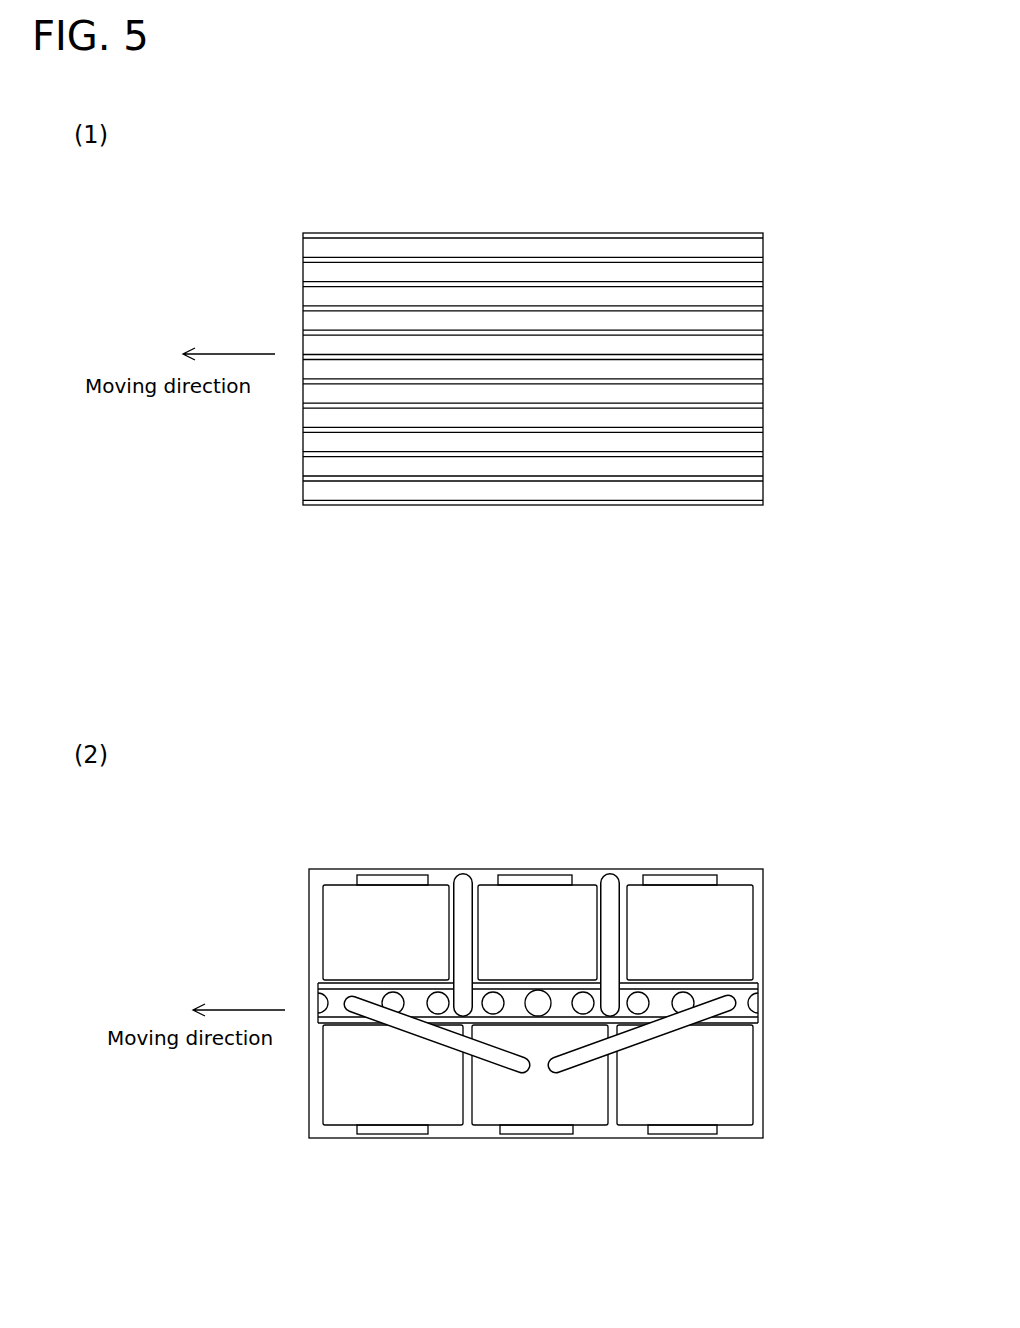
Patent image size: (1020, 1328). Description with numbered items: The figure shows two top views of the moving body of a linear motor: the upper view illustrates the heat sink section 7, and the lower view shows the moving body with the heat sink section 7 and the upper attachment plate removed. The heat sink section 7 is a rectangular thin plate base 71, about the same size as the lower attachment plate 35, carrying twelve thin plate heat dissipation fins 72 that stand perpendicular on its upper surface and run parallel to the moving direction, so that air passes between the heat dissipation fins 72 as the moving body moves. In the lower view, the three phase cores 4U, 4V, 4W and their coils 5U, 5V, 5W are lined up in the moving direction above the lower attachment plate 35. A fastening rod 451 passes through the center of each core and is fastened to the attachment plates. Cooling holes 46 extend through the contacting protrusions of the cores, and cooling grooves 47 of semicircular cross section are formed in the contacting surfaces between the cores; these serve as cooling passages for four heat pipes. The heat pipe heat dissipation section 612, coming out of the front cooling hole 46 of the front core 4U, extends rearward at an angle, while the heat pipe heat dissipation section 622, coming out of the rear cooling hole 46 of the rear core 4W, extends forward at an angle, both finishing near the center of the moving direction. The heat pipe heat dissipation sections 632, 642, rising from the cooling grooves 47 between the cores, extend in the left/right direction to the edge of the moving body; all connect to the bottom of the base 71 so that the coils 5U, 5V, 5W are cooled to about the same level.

The heat sink section 7 is at (338, 199).
The base 71 is at (742, 247).
The heat dissipation fins 72 is at (522, 258).
The lower attachment plate 35 is at (322, 879).
The cooling hole 46 is at (742, 995).
The cooling groove 47 is at (487, 984).
The fastening rod 451 is at (540, 991).
The heat pipe heat dissipation section 632 is at (463, 873).
The heat pipe heat dissipation section 642 is at (610, 873).
The heat pipe heat dissipation section 612 is at (388, 1022).
The heat pipe heat dissipation section 622 is at (672, 1027).
The core 4U is at (380, 1130).
The coil 5U is at (445, 1096).
The core 4V is at (520, 1130).
The coil 5V is at (588, 1096).
The core 4W is at (667, 1130).
The coil 5W is at (733, 1096).